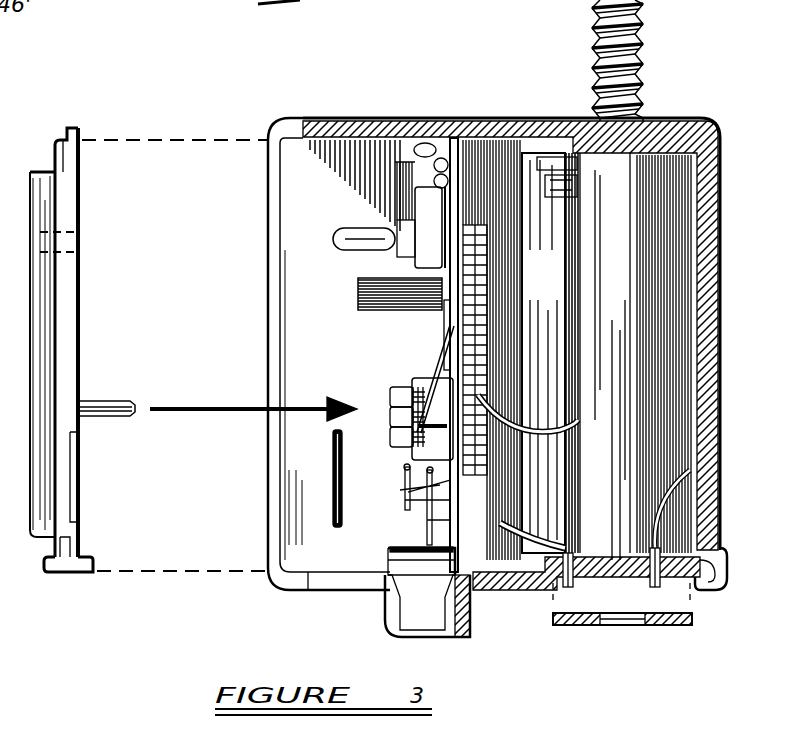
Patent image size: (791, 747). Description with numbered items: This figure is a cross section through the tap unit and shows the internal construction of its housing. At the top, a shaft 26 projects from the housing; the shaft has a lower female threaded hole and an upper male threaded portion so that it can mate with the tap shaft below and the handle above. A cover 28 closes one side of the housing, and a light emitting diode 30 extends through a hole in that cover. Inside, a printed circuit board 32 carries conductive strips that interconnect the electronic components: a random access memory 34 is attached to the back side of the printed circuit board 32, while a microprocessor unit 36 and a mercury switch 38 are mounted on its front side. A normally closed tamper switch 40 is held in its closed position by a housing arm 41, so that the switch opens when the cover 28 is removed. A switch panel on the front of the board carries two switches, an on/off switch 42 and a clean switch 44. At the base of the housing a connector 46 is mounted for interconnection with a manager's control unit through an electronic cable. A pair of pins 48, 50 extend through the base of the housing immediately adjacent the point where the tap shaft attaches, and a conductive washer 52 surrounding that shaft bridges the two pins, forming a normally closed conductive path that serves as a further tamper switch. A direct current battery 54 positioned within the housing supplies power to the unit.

The shaft 26 is at (645, 55).
The cover 28 is at (80, 192).
The light emitting diode 30 is at (333, 236).
The printed circuit board 32 is at (460, 121).
The random access memory 34 is at (473, 232).
The microprocessor unit 36 is at (445, 335).
The mercury switch 38 is at (358, 283).
The tamper switch 40 is at (430, 362).
The housing arm 41 is at (127, 400).
The on/off switch 42 is at (390, 392).
The clean switch 44 is at (395, 428).
The connector 46 is at (420, 597).
The pin 48 is at (567, 588).
The pin 50 is at (660, 580).
The conductive washer 52 is at (655, 625).
The direct current battery 54 is at (558, 288).